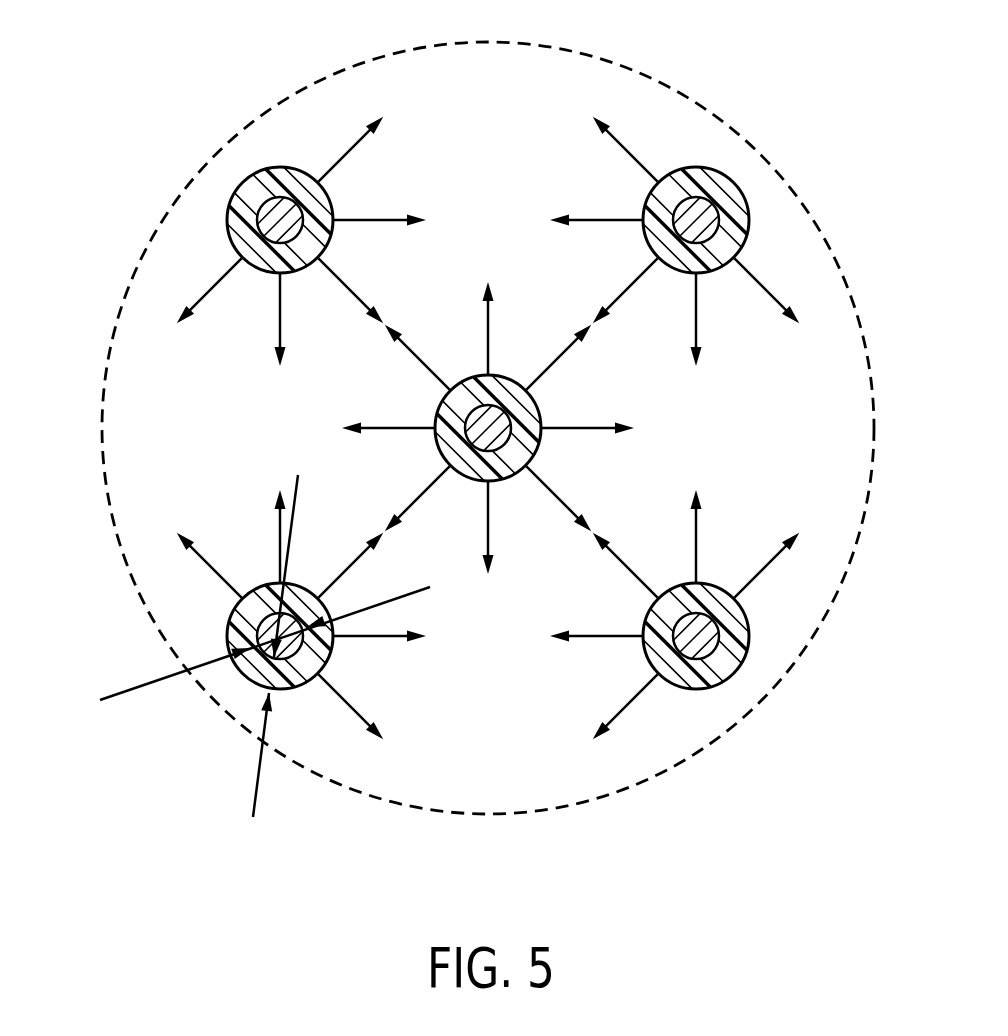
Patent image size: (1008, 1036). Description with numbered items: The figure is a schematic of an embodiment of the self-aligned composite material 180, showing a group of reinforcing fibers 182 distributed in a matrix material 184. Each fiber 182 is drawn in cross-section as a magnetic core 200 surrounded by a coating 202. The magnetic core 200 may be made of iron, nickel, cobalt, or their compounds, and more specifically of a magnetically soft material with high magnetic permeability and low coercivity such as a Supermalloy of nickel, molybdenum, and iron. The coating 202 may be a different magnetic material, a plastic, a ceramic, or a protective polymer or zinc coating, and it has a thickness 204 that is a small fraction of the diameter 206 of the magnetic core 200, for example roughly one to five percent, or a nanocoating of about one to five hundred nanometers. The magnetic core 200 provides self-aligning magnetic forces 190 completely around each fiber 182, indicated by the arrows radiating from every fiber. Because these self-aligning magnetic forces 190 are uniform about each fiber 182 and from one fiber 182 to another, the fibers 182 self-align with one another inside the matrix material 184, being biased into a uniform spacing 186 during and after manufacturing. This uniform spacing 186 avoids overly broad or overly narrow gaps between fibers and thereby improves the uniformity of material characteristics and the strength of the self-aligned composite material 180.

The self-aligned composite material 180 is at (470, 454).
The fibers 182 is at (517, 435).
The matrix material 184 is at (532, 65).
The uniform spacing 186 is at (478, 778).
The self-aligning magnetic forces 190 is at (370, 218).
The magnetic core 200 is at (686, 661).
The coating 202 is at (755, 632).
The thickness 204 is at (258, 782).
The diameter 206 is at (135, 688).